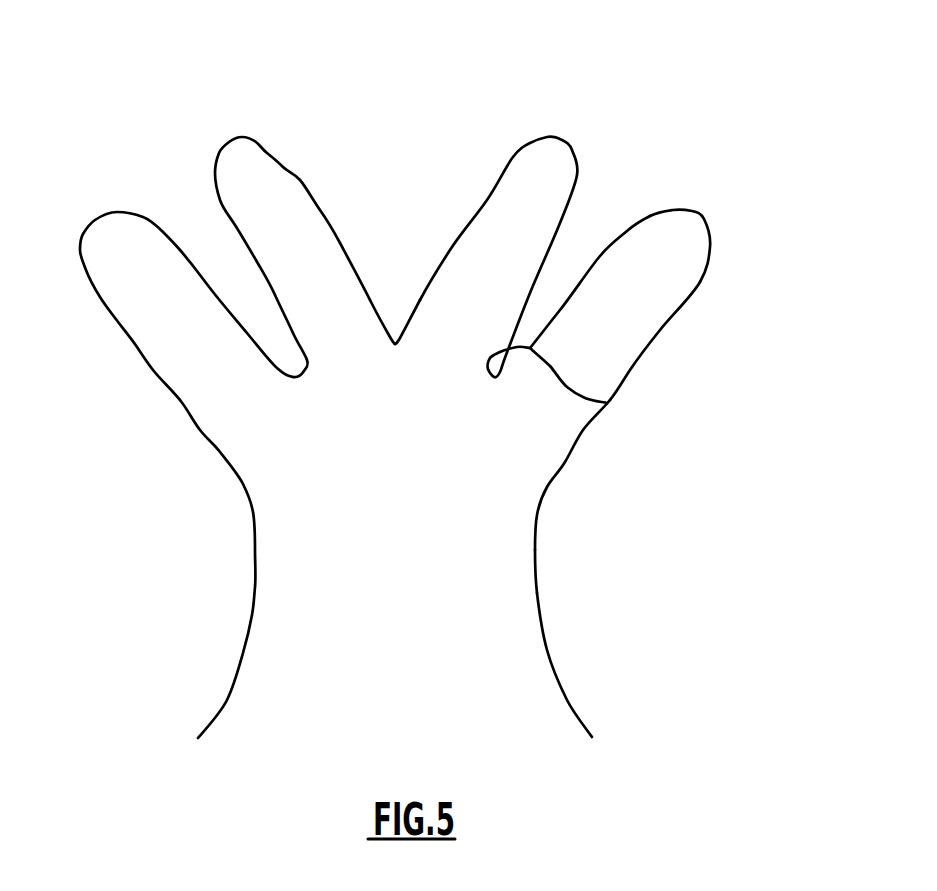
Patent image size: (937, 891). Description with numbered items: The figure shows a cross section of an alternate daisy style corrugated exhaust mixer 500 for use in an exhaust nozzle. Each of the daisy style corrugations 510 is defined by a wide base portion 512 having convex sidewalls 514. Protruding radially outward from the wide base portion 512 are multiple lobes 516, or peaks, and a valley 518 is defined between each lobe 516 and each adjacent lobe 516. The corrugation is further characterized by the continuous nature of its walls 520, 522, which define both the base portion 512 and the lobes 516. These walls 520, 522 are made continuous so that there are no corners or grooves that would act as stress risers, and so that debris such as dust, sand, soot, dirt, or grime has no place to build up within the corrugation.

The daisy style corrugated exhaust mixer 500 is at (707, 90).
The daisy style corrugation 510 is at (418, 490).
The wide base portion 512 is at (493, 600).
The convex sidewalls 514 is at (255, 588).
The lobes 516 is at (103, 237).
The valley 518 is at (395, 337).
The wall 520 is at (570, 705).
The wall 522 is at (700, 218).